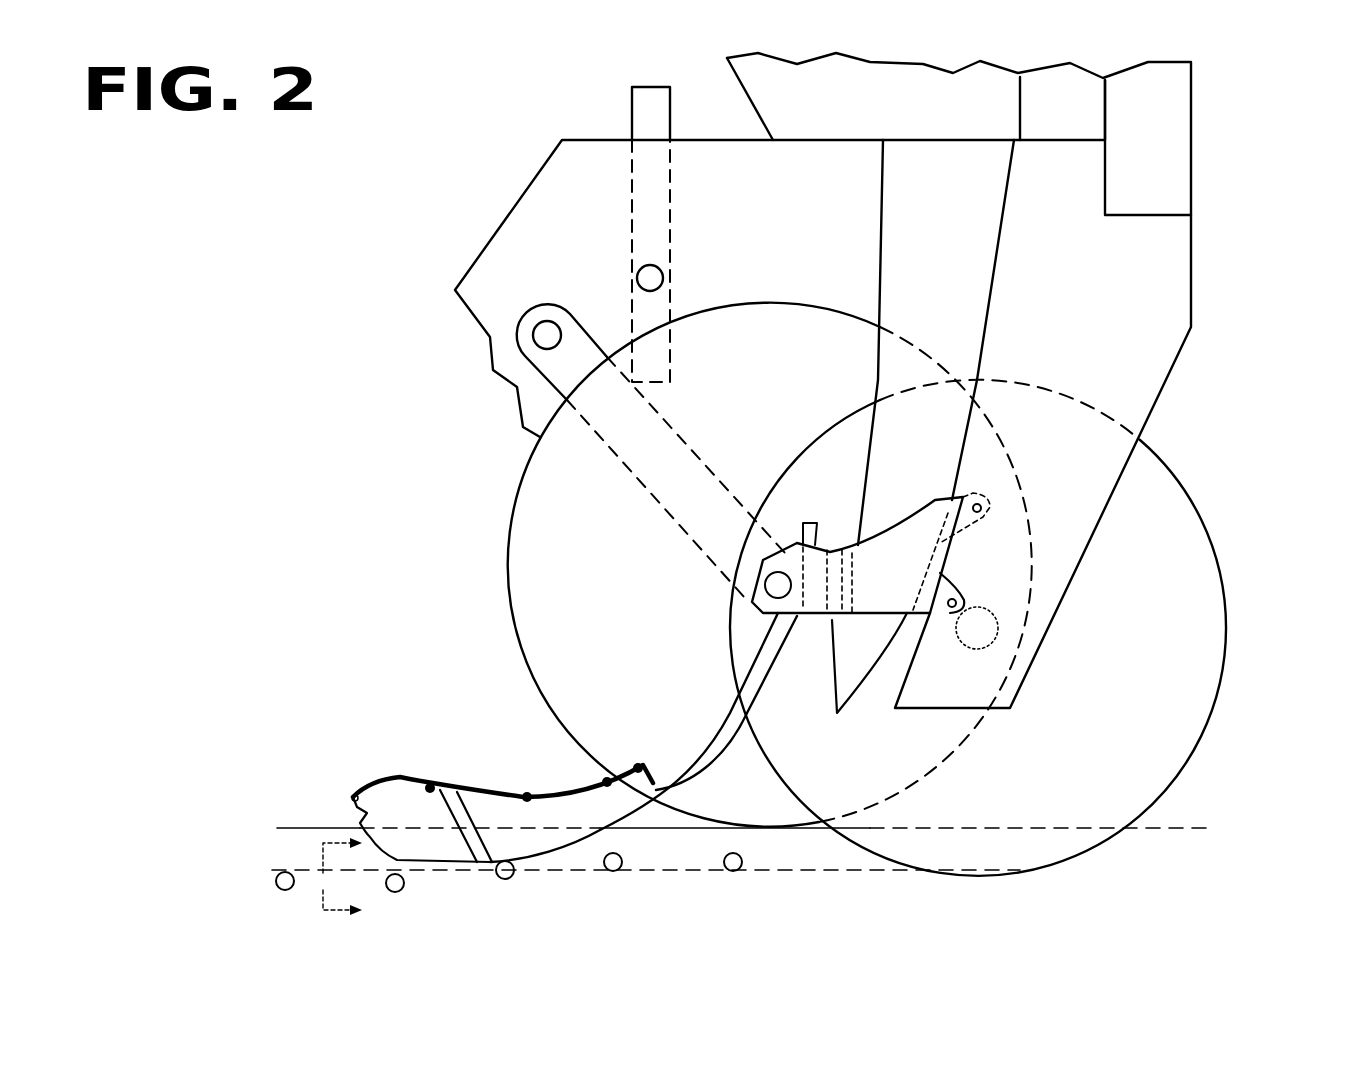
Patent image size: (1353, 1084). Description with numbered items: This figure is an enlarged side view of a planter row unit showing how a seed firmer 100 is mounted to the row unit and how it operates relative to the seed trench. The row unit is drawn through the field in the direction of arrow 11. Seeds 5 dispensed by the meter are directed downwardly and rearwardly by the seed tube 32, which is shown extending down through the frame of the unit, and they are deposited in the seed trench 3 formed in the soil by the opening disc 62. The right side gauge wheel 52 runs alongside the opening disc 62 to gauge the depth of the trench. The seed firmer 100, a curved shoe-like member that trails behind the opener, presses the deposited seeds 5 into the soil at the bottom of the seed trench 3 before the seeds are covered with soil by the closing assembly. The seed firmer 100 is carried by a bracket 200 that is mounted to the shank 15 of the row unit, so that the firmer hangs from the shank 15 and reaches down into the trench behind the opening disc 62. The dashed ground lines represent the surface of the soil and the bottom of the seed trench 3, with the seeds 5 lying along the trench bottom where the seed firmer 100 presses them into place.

The shank 15 is at (1137, 347).
The seed tube 32 is at (897, 437).
The gauge wheel 52 is at (532, 570).
The opening disc 62 is at (1180, 543).
The bracket 200 is at (903, 538).
The seed firmer 100 is at (411, 766).
The seed trench 3 is at (778, 857).
The seeds 5 is at (507, 879).
The direction of travel arrow 11 is at (325, 880).